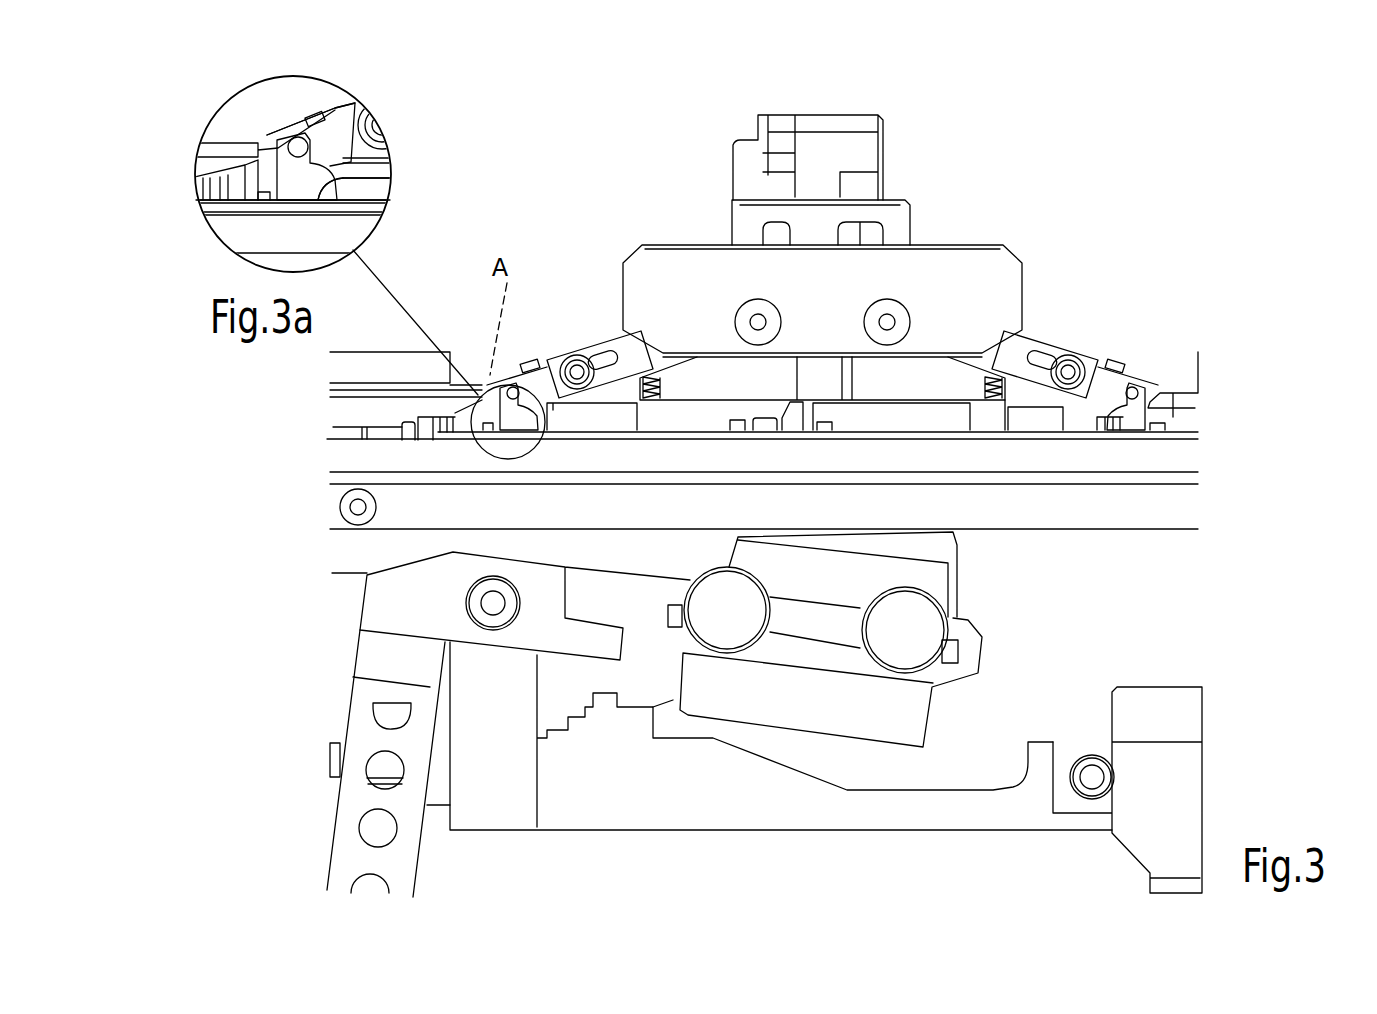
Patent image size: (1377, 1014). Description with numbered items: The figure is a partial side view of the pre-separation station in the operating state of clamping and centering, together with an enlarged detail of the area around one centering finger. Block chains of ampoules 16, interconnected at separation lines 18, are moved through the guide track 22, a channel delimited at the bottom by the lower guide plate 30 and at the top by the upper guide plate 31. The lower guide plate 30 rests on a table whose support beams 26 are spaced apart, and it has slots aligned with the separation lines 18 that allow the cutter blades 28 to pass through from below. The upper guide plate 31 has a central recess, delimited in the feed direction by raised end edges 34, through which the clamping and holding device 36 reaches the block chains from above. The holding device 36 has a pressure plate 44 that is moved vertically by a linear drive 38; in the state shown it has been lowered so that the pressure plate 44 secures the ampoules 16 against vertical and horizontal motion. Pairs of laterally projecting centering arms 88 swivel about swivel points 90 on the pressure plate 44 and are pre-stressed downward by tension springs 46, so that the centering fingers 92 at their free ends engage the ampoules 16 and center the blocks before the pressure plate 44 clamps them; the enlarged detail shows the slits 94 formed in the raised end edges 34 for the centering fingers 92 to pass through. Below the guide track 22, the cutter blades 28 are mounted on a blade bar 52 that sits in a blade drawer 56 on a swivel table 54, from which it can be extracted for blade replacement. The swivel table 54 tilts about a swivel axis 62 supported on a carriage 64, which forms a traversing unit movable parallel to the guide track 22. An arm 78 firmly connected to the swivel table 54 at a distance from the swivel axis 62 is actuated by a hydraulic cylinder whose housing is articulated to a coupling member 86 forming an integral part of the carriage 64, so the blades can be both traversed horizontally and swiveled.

In FIG. 3a, the ampoules 16 is at (370, 170).
In FIG. 3, the ampoules 16 is at (597, 413).
In FIG. 3a, the separation lines 18 is at (343, 177).
In FIG. 3, the guide track 22 is at (397, 415).
In FIG. 3, the support beams 26 is at (1073, 455).
In FIG. 3, the cutter blades 28 is at (937, 540).
In FIG. 3a, the lower guide plate 30 is at (240, 152).
In FIG. 3, the lower guide plate 30 is at (1195, 437).
In FIG. 3, the upper guide plate 31 is at (1190, 393).
In FIG. 3a, the raised end edges 34 is at (312, 118).
In FIG. 3, the raised end edges 34 is at (533, 360).
In FIG. 3, the clamping and holding device 36 is at (960, 222).
In FIG. 3, the linear drive 38 is at (860, 148).
In FIG. 3, the pressure plate 44 is at (885, 375).
In FIG. 3, the tension springs 46 is at (640, 390).
In FIG. 3, the blade bar 52 is at (950, 580).
In FIG. 3, the swivel table 54 is at (587, 602).
In FIG. 3, the blade drawer 56 is at (980, 642).
In FIG. 3, the swivel axis 62 is at (493, 597).
In FIG. 3, the carriage 64 is at (638, 767).
In FIG. 3, the arm 78 is at (347, 800).
In FIG. 3, the coupling member 86 is at (1180, 833).
In FIG. 3a, the centering arms 88 is at (297, 135).
In FIG. 3, the centering arms 88 is at (597, 357).
In FIG. 3, the swivel points 90 is at (887, 322).
In FIG. 3a, the centering fingers 92 is at (263, 193).
In FIG. 3, the centering fingers 92 is at (480, 435).
In FIG. 3a, the slits 94 is at (313, 110).
In FIG. 3, the slits 94 is at (533, 357).